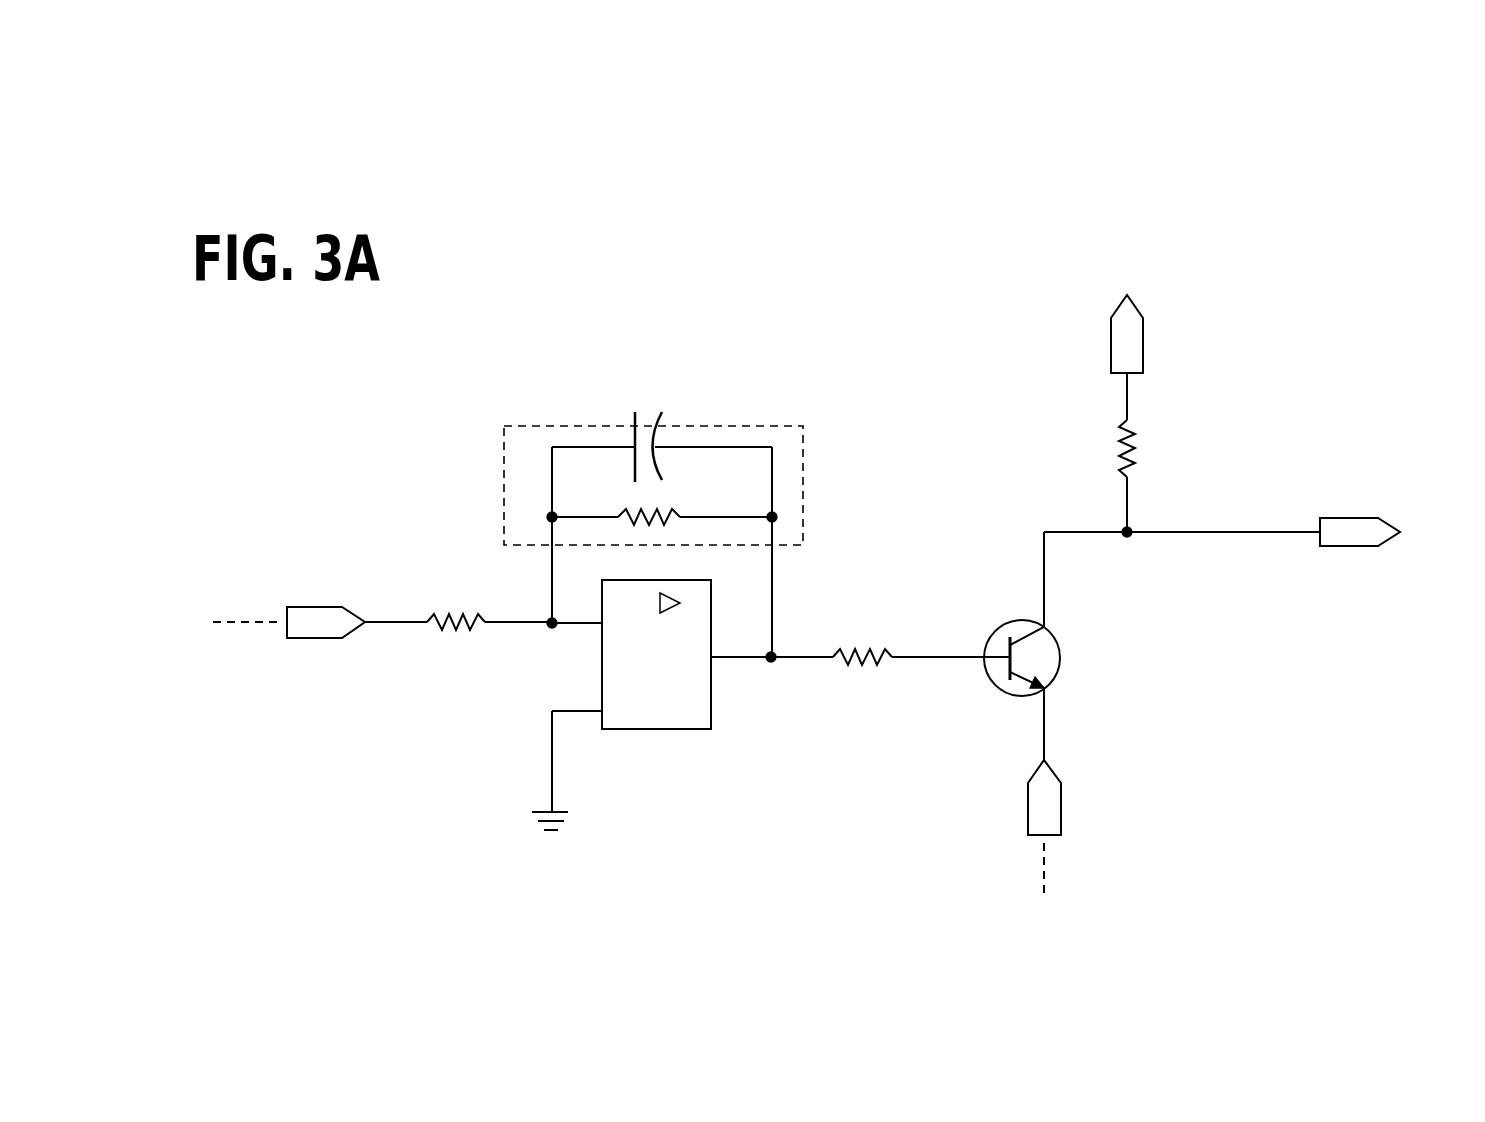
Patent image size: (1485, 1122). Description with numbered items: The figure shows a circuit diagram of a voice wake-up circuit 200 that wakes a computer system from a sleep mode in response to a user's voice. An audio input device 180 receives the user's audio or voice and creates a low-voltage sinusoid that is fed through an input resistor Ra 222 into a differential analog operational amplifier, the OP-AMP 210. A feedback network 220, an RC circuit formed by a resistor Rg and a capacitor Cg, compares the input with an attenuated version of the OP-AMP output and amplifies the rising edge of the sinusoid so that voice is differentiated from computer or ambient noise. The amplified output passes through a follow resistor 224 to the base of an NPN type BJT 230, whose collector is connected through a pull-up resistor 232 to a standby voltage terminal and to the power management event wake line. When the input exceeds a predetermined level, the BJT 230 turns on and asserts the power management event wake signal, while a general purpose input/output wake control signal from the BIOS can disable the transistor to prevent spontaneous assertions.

The voice wake-up circuit 200 is at (1271, 297).
The audio input device 180 is at (300, 607).
The input resistor Ra 222 is at (457, 607).
The feedback network 220 is at (782, 425).
The OP-AMP 210 is at (711, 698).
The follow resistor R1 224 is at (862, 645).
The NPN type BJT 230 is at (1005, 618).
The pull-up resistor R2 232 is at (1130, 420).